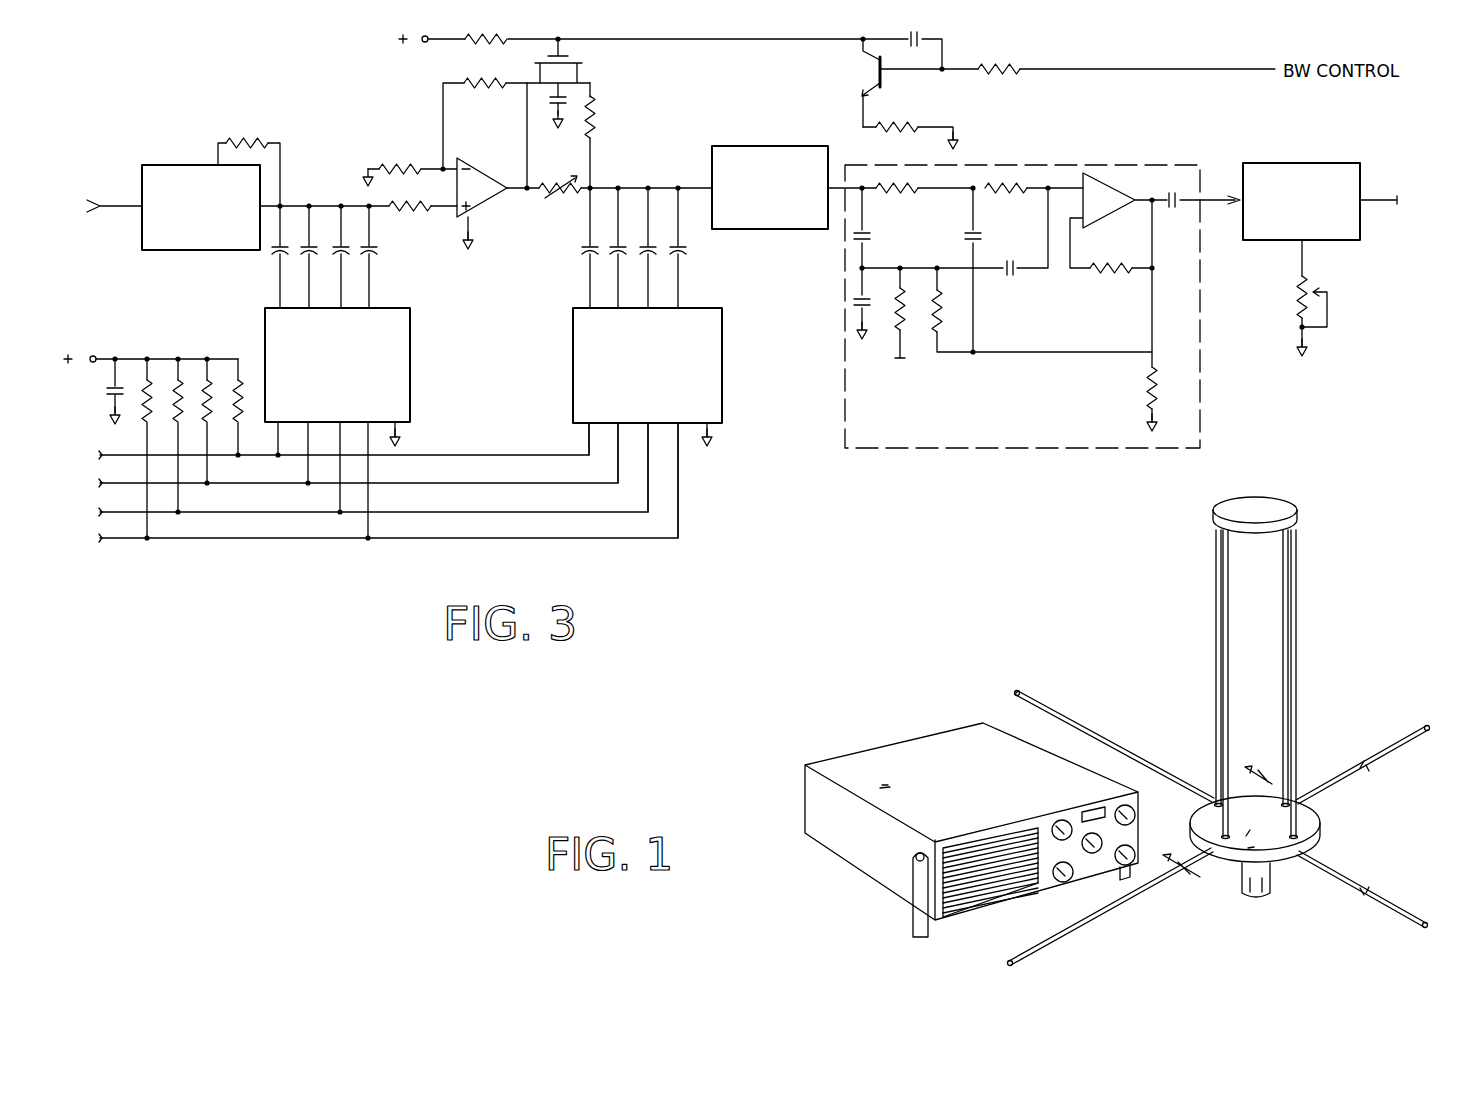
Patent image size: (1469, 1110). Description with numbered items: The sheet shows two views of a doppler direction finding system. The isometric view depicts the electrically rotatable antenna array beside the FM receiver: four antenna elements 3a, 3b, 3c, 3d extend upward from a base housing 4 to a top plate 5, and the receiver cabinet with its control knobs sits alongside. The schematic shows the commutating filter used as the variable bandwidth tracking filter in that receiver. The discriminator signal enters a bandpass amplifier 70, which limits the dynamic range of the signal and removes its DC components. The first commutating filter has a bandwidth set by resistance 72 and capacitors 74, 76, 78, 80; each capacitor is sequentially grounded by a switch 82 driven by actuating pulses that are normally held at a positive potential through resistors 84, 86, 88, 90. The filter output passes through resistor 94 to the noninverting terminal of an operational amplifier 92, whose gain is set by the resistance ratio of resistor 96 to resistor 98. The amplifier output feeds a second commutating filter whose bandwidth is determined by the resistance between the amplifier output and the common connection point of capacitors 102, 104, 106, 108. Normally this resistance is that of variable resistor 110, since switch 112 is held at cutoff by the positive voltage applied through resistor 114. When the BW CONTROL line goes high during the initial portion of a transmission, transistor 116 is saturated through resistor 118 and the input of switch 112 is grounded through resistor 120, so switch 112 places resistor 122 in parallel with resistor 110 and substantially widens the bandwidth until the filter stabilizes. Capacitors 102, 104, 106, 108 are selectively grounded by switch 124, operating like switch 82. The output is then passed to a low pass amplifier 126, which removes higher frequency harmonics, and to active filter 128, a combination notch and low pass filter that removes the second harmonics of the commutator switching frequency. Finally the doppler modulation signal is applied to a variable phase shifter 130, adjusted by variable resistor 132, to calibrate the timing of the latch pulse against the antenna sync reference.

In FIG. 1, the antenna element 3a is at (1216, 660).
In FIG. 1, the antenna element 3b is at (1229, 685).
In FIG. 1, the antenna element 3c is at (1295, 617).
In FIG. 1, the antenna element 3d is at (1283, 575).
In FIG. 1, the base housing 4 is at (1219, 828).
In FIG. 1, the top plate 5 is at (1282, 508).
In FIG. 3, the bandpass amplifier 70 is at (207, 165).
In FIG. 3, the resistance 72 is at (261, 142).
In FIG. 3, the capacitor 74 is at (278, 261).
In FIG. 3, the capacitor 76 is at (307, 260).
In FIG. 3, the capacitor 78 is at (343, 260).
In FIG. 3, the capacitor 80 is at (371, 259).
In FIG. 3, the switch 82 is at (410, 380).
In FIG. 3, the resistor 84 is at (145, 385).
In FIG. 3, the resistor 86 is at (178, 385).
In FIG. 3, the resistor 88 is at (207, 385).
In FIG. 3, the resistor 90 is at (240, 385).
In FIG. 3, the operational amplifier 92 is at (487, 209).
In FIG. 3, the resistor 94 is at (414, 212).
In FIG. 3, the resistor 96 is at (482, 88).
In FIG. 3, the resistor 98 is at (393, 165).
In FIG. 3, the capacitor 102 is at (586, 257).
In FIG. 3, the capacitor 104 is at (615, 260).
In FIG. 3, the capacitor 106 is at (651, 260).
In FIG. 3, the capacitor 108 is at (678, 259).
In FIG. 3, the variable resistor 110 is at (560, 195).
In FIG. 3, the switch 112 is at (580, 58).
In FIG. 3, the resistor 114 is at (462, 47).
In FIG. 3, the transistor 116 is at (868, 63).
In FIG. 3, the resistor 118 is at (1010, 60).
In FIG. 3, the resistor 120 is at (908, 118).
In FIG. 3, the resistor 122 is at (597, 111).
In FIG. 3, the switch 124 is at (722, 385).
In FIG. 3, the low pass amplifier 126 is at (760, 146).
In FIG. 3, the active filter 128 is at (1140, 165).
In FIG. 3, the variable phase shifter 130 is at (1322, 163).
In FIG. 3, the variable resistor 132 is at (1295, 298).